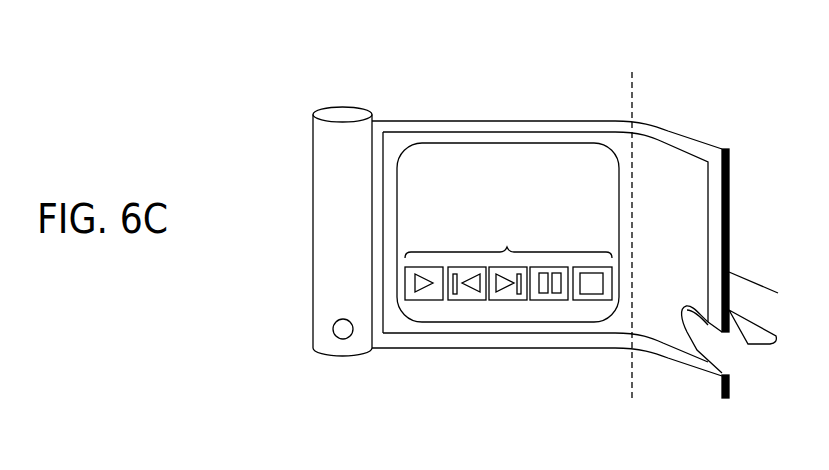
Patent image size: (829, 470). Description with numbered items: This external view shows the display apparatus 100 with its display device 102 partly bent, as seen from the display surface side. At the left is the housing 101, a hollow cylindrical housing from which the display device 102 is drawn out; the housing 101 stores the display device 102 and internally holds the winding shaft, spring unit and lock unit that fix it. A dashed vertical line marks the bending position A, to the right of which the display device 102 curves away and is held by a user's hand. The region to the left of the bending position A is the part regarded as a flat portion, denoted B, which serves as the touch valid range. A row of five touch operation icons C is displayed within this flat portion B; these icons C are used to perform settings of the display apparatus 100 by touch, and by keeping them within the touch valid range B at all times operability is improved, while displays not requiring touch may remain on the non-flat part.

The display apparatus 100 is at (448, 368).
The housing 101 is at (345, 108).
The display device 102 is at (690, 143).
The bending position A is at (631, 225).
The flat portion (touch valid range) B is at (508, 308).
The touch operation icons C is at (507, 247).